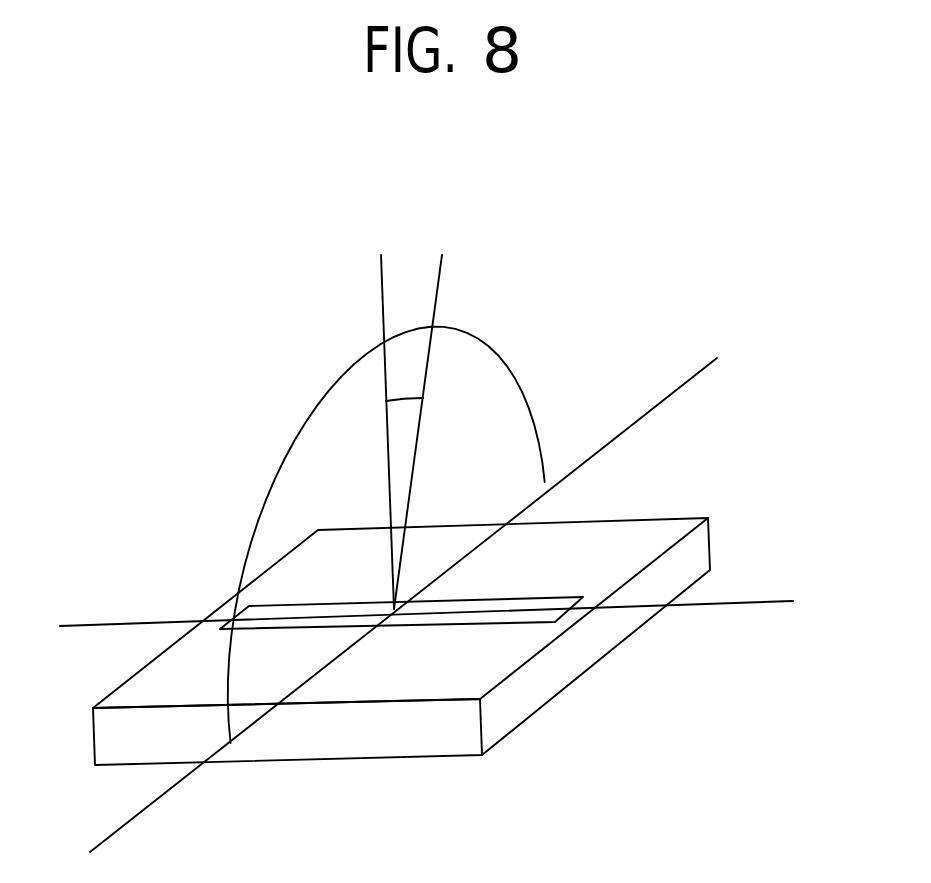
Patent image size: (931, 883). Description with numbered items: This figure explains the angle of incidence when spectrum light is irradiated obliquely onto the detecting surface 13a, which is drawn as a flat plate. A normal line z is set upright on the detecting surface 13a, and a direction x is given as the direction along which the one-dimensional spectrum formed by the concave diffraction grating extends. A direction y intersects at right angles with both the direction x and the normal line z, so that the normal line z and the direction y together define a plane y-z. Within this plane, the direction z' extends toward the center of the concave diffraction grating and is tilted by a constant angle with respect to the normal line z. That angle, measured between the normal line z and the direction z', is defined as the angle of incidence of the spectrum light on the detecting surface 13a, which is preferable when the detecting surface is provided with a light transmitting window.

The detecting surface 13a is at (608, 542).
The direction x is at (444, 601).
The direction y is at (414, 585).
The normal line z is at (380, 409).
The direction z' is at (427, 409).